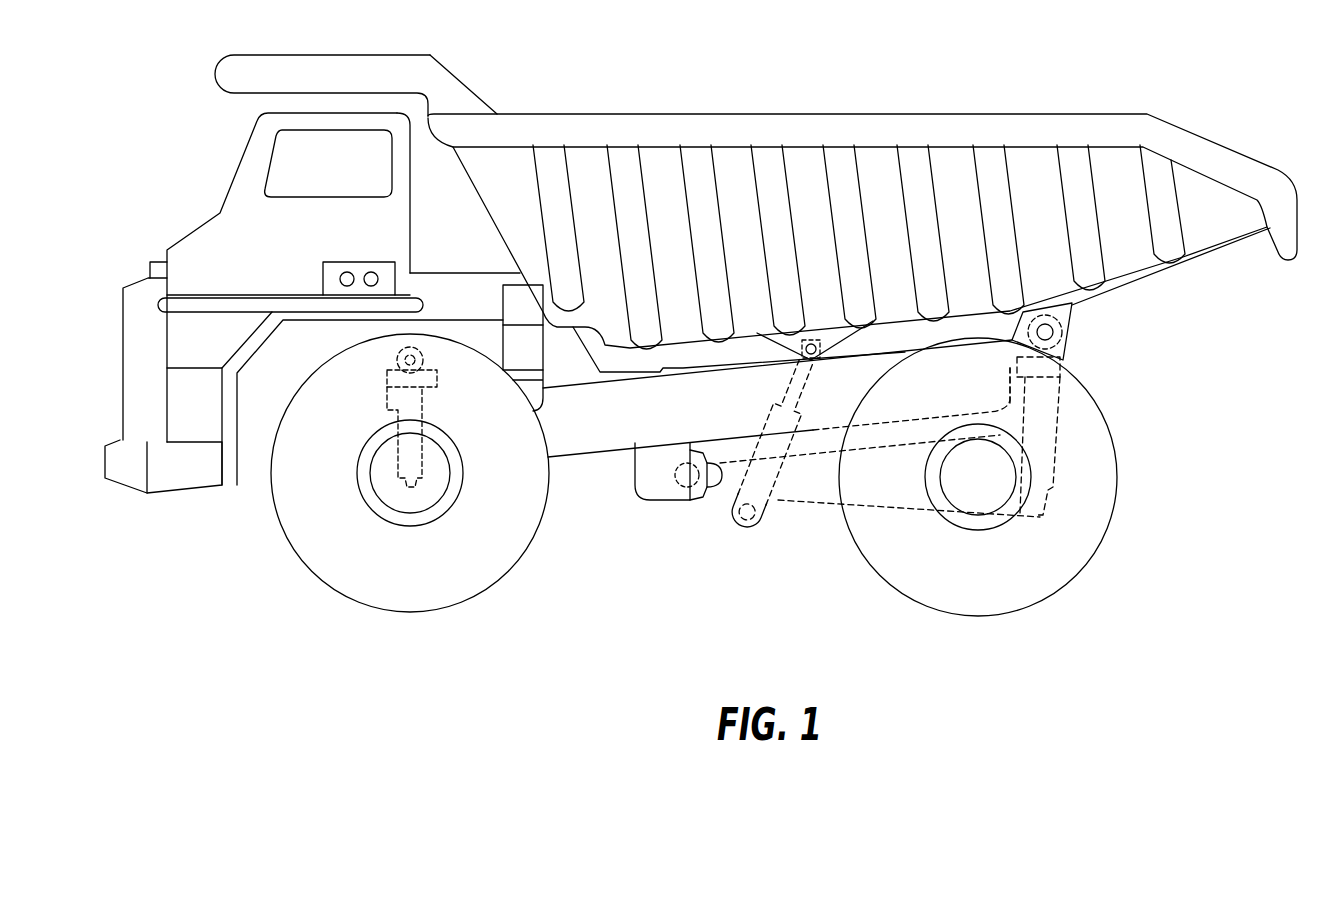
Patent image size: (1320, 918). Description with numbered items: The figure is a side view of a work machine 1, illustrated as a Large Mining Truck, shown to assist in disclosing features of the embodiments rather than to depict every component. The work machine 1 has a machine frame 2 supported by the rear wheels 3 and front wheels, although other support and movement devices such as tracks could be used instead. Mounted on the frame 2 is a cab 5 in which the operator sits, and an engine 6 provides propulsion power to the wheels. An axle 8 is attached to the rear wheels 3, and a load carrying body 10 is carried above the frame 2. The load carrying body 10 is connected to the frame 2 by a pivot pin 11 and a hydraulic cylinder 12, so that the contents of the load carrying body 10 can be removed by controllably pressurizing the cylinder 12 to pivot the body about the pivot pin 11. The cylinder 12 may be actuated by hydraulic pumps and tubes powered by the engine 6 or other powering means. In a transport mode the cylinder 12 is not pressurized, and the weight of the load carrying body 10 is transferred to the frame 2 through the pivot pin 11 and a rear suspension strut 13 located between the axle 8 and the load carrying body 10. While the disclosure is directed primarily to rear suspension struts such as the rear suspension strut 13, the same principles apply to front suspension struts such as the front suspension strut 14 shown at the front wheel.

The work machine 1 is at (672, 63).
The machine frame 2 is at (618, 432).
The rear wheels 3 is at (957, 573).
The cab 5 is at (247, 192).
The engine 6 is at (330, 282).
The axle 8 is at (997, 497).
The load carrying body 10 is at (1208, 266).
The pivot pin 11 is at (811, 360).
The hydraulic cylinder 12 is at (757, 485).
The rear suspension strut 13 is at (1040, 436).
The front suspension strut 14 is at (405, 460).